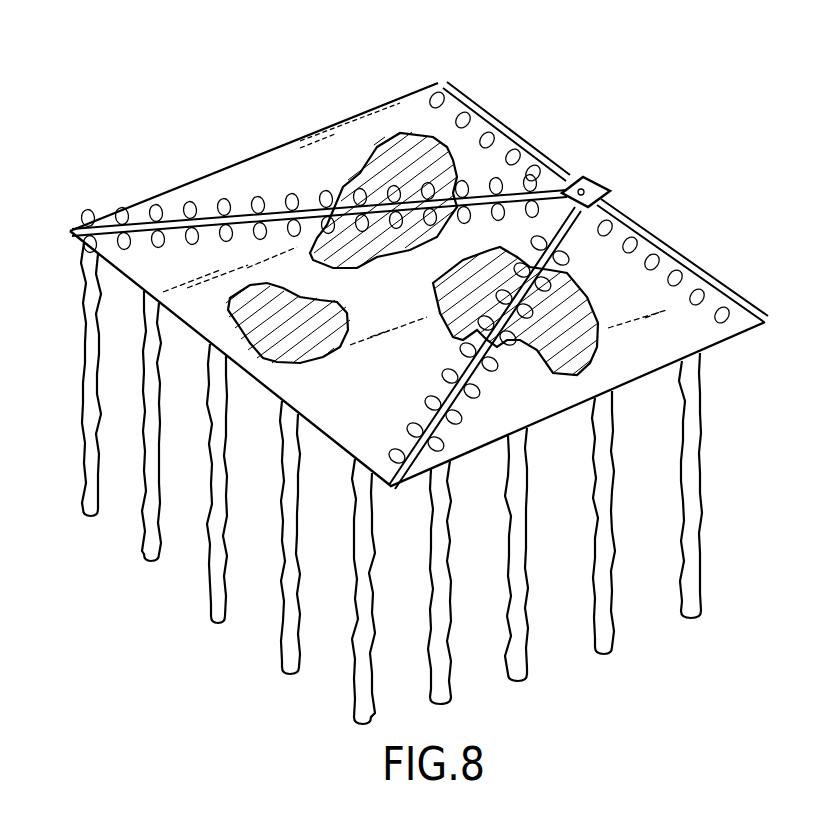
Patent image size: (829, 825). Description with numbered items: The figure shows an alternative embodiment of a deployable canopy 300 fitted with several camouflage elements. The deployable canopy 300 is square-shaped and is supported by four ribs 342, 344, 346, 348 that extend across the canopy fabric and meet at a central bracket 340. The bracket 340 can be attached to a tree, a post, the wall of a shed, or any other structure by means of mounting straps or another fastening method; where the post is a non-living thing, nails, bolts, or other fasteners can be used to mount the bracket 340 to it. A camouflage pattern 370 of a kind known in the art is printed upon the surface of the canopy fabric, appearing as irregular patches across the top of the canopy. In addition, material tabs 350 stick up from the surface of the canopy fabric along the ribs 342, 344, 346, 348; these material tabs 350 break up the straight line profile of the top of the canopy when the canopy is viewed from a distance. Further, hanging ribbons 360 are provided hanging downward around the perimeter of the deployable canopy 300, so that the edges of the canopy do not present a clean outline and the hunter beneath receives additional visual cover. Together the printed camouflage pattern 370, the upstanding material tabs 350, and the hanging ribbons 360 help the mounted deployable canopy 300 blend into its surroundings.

The deployable canopy 300 is at (275, 160).
The bracket 340 is at (601, 184).
The rib 342 is at (688, 258).
The rib 344 is at (400, 487).
The rib 346 is at (112, 233).
The rib 348 is at (456, 92).
The material tabs 350 is at (227, 207).
The hanging ribbons 360 is at (153, 520).
The camouflage pattern 370 is at (382, 137).